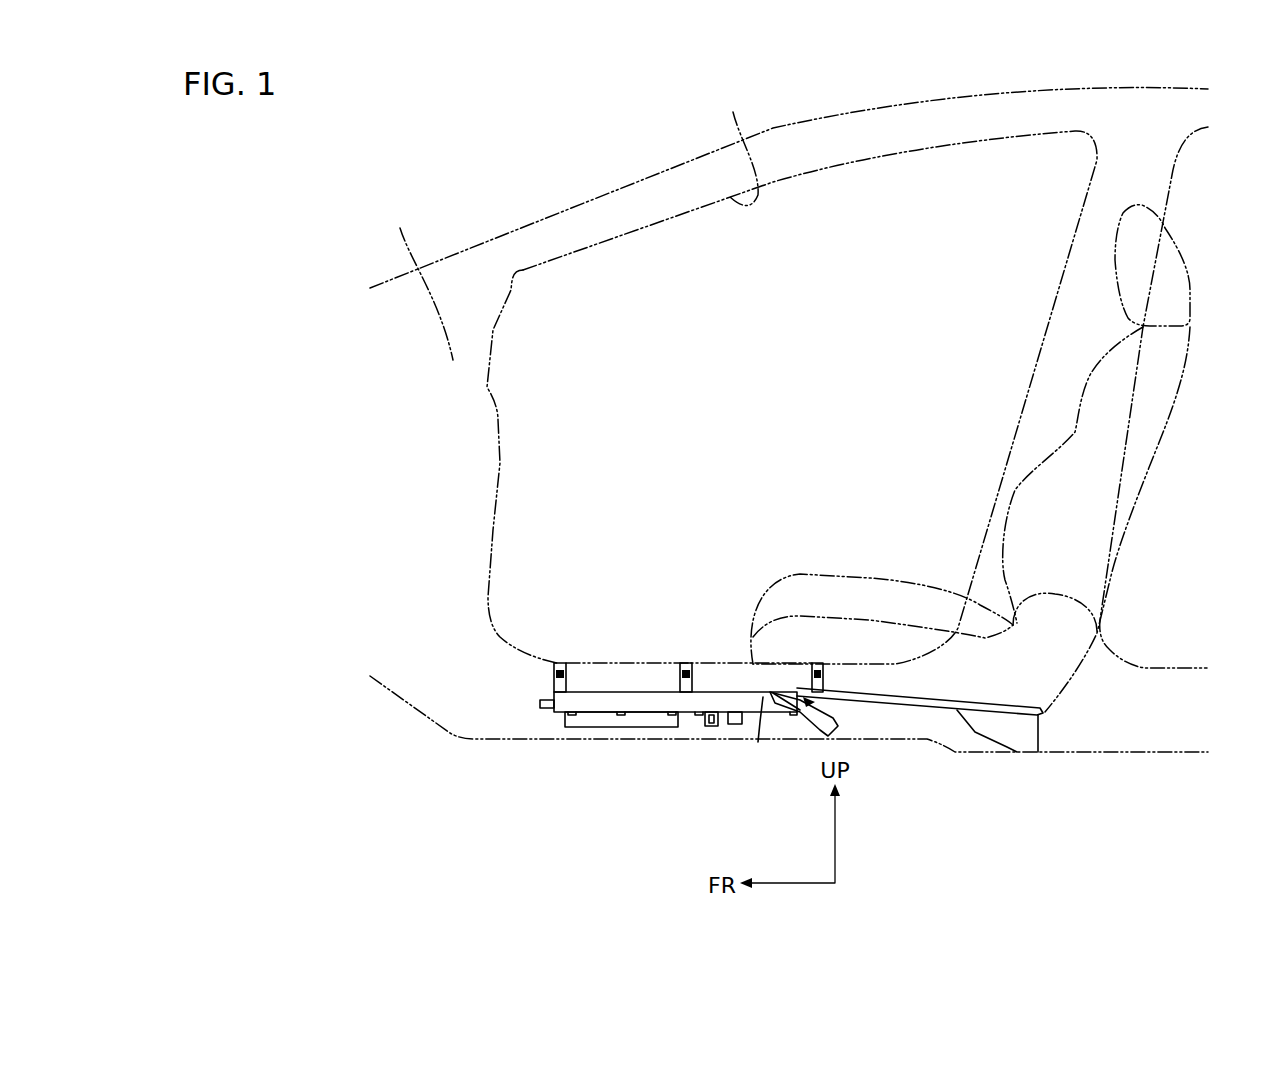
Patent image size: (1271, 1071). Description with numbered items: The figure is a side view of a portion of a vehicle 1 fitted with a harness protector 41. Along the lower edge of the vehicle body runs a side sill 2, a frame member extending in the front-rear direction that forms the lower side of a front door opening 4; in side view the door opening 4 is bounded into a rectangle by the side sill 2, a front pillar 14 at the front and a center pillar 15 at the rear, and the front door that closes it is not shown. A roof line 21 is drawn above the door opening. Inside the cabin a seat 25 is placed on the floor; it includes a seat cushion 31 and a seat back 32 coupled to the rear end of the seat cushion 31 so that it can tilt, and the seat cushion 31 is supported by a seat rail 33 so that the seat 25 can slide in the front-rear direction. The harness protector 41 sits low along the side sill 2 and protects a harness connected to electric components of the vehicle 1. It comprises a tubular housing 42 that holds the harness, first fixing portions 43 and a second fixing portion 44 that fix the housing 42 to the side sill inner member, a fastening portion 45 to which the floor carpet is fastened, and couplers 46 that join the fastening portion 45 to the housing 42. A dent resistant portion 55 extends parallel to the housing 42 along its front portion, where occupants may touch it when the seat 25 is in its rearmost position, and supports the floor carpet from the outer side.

The vehicle 1 is at (552, 165).
The side sill 2 is at (620, 740).
The front door opening 4 is at (742, 145).
The front pillar 14 is at (418, 280).
The center pillar 15 is at (1107, 210).
The roof 21 is at (653, 167).
The seat 25 is at (1065, 402).
The seat cushion 31 is at (823, 570).
The seat back 32 is at (1097, 357).
The seat rail 33 is at (1050, 733).
The harness protector 41 is at (625, 672).
The housing 42 is at (598, 706).
The first fixing portion 43 is at (554, 674).
The second fixing portion 44 is at (712, 722).
The fastening portion 45 is at (557, 663).
The coupler 46 is at (554, 686).
The dent resistant portion 55 is at (632, 718).